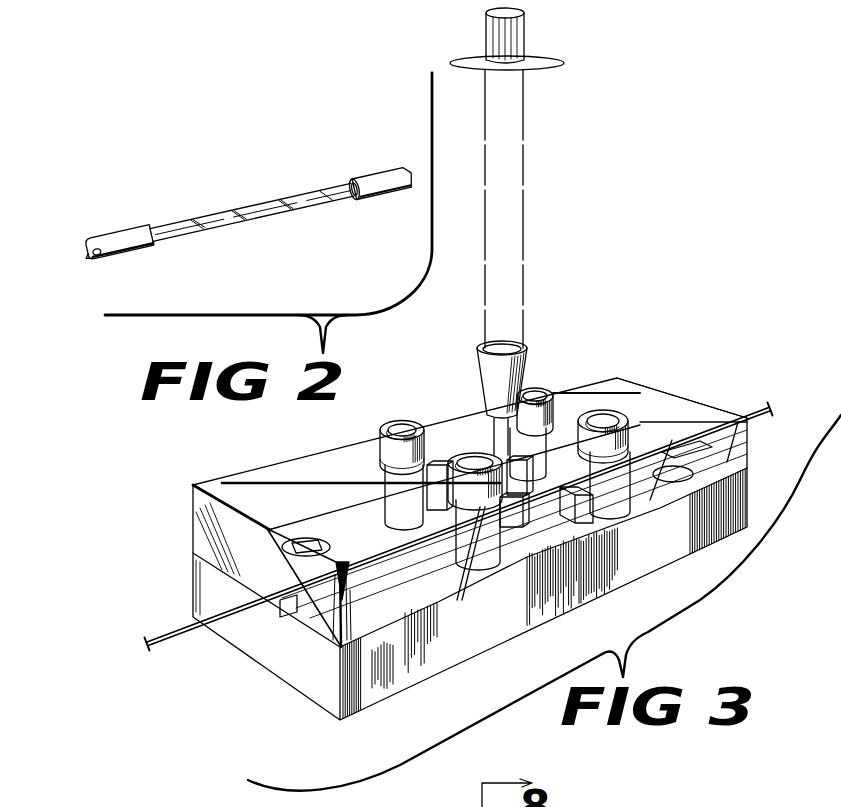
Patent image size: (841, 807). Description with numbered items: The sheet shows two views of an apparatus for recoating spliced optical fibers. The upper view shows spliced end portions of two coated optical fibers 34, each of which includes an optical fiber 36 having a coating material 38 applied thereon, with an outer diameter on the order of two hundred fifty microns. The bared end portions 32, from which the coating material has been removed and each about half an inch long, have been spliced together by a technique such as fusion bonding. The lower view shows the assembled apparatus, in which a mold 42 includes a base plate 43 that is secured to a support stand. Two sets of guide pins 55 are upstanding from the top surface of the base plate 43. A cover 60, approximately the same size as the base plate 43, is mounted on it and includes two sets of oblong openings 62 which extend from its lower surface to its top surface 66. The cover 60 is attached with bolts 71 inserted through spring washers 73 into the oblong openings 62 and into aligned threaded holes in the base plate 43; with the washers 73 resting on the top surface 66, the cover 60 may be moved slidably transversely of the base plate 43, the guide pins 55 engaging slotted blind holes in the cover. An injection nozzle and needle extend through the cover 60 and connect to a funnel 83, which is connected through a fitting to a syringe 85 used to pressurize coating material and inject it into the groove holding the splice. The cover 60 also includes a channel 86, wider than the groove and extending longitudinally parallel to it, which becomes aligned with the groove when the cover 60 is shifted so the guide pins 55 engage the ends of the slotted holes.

In FIG. 2, the bared end portion 32 is at (238, 218).
In FIG. 2, the coated optical fiber 34 is at (131, 233).
In FIG. 3, the coated optical fiber 34 is at (762, 412).
In FIG. 2, the optical fiber 36 is at (100, 254).
In FIG. 2, the coating material 38 is at (91, 262).
In FIG. 3, the mold 42 is at (293, 703).
In FIG. 3, the base plate 43 is at (492, 637).
In FIG. 3, the guide pin 55 is at (432, 474).
In FIG. 3, the cover 60 is at (323, 452).
In FIG. 3, the oblong opening 62 is at (430, 497).
In FIG. 3, the top surface 66 is at (657, 398).
In FIG. 3, the bolt 71 is at (478, 456).
In FIG. 3, the spring washer 73 is at (384, 460).
In FIG. 3, the funnel 83 is at (520, 346).
In FIG. 3, the syringe 85 is at (550, 67).
In FIG. 3, the channel 86 is at (296, 606).